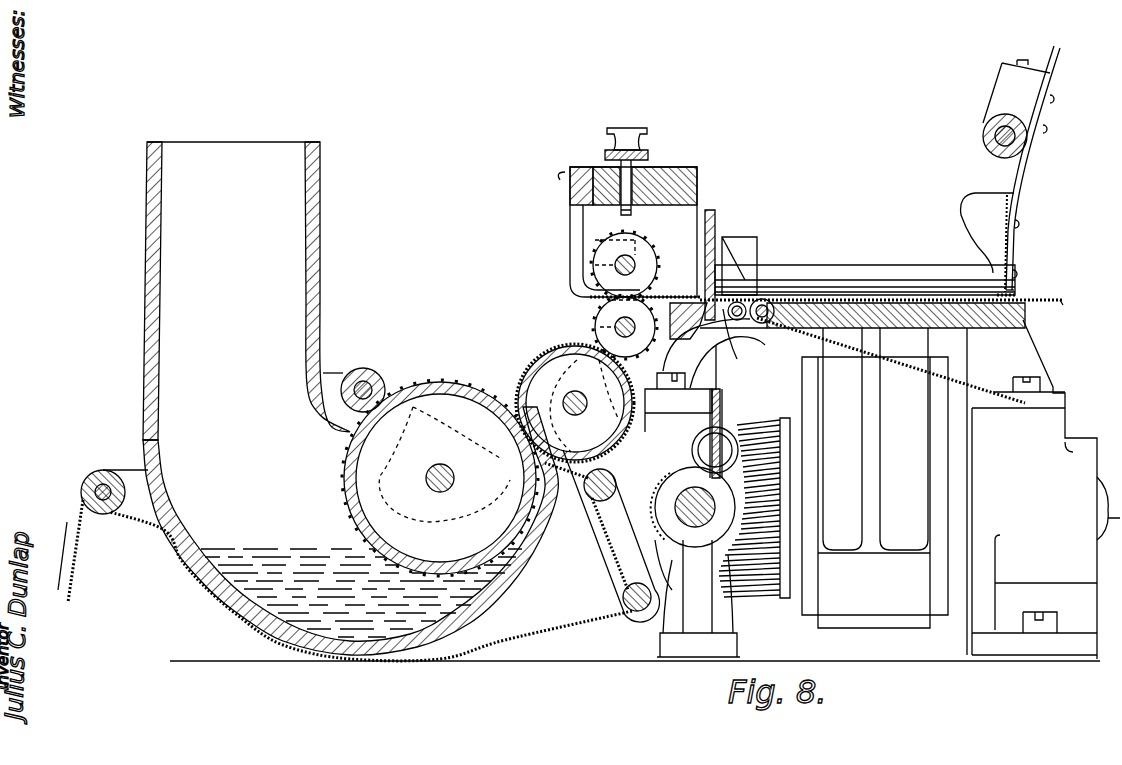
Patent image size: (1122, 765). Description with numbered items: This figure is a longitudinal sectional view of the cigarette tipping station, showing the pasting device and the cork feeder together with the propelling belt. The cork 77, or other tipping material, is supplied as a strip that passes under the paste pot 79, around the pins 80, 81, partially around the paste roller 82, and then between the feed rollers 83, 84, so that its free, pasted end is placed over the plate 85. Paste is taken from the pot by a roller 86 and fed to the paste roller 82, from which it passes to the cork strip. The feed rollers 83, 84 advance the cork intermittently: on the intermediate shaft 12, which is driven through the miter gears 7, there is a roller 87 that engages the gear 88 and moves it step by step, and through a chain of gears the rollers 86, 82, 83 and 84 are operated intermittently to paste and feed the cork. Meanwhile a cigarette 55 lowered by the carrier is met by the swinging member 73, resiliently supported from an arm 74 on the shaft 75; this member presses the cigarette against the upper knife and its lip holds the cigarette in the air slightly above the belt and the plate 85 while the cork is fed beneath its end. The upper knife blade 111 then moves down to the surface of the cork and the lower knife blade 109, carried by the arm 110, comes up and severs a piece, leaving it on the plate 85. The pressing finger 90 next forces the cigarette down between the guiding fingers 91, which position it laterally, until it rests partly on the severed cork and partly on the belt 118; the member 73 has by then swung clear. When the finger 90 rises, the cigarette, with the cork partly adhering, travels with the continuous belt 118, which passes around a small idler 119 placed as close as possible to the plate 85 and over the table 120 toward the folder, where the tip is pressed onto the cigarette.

The miter gears 7 is at (790, 498).
The intermediate shaft 12 is at (676, 505).
The cigarette 55 is at (873, 285).
The swinging member 73 is at (987, 233).
The arm 74 is at (1022, 168).
The shaft 75 is at (985, 145).
The cork 77 is at (72, 562).
The paste pot 79 is at (322, 300).
The pin 80 is at (623, 597).
The pin 81 is at (612, 483).
The paste roller 82 is at (553, 374).
The feed roller 83 is at (598, 325).
The feed roller 84 is at (640, 247).
The plate 85 is at (745, 330).
The roller 86 is at (346, 498).
The roller 87 is at (698, 450).
The gear 88 is at (655, 548).
The pressing finger 90 is at (572, 295).
The guiding fingers 91 is at (746, 258).
The lower knife blade 109 is at (719, 370).
The arm 110 is at (724, 410).
The upper knife blade 111 is at (713, 215).
The belt 118 is at (1040, 300).
The idler 119 is at (765, 326).
The table 120 is at (1030, 322).